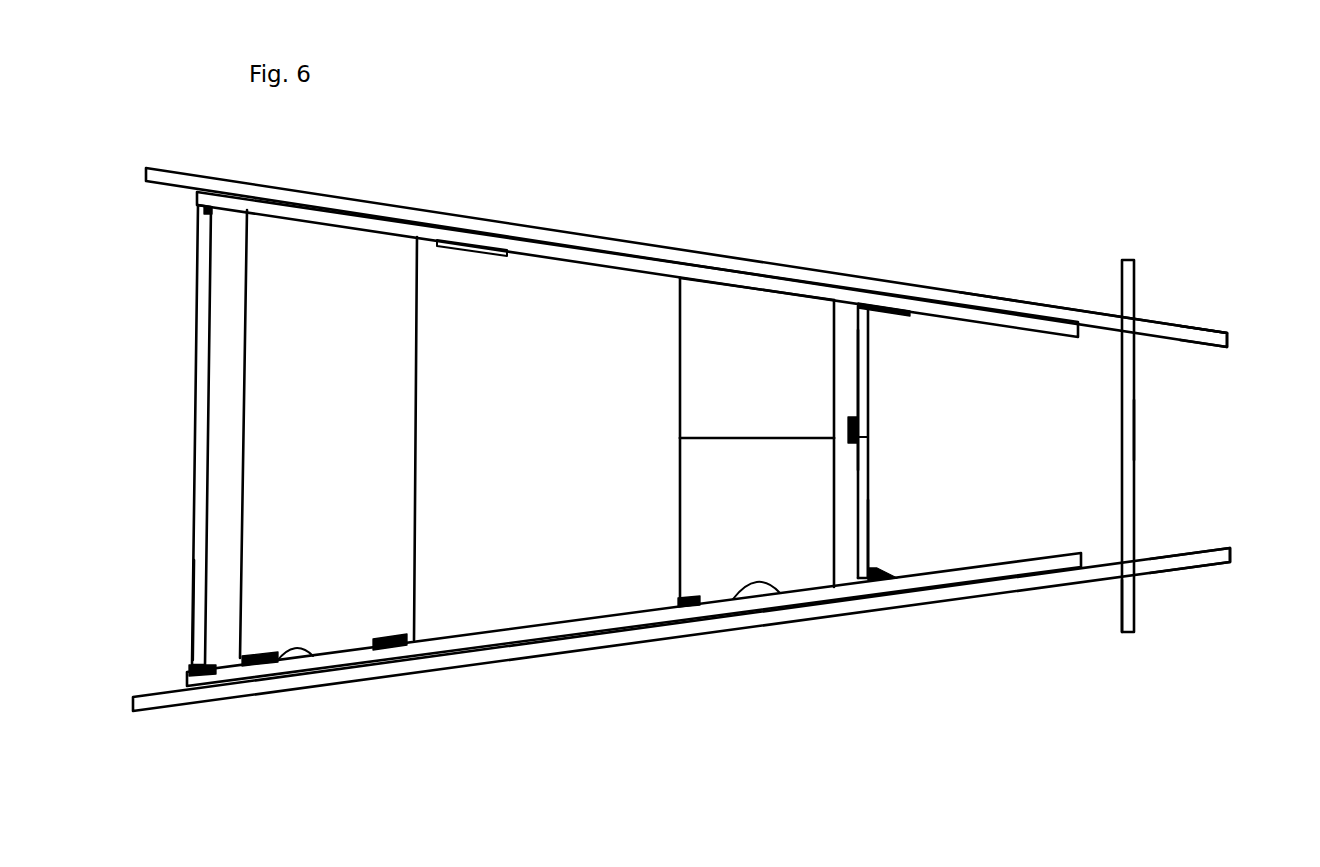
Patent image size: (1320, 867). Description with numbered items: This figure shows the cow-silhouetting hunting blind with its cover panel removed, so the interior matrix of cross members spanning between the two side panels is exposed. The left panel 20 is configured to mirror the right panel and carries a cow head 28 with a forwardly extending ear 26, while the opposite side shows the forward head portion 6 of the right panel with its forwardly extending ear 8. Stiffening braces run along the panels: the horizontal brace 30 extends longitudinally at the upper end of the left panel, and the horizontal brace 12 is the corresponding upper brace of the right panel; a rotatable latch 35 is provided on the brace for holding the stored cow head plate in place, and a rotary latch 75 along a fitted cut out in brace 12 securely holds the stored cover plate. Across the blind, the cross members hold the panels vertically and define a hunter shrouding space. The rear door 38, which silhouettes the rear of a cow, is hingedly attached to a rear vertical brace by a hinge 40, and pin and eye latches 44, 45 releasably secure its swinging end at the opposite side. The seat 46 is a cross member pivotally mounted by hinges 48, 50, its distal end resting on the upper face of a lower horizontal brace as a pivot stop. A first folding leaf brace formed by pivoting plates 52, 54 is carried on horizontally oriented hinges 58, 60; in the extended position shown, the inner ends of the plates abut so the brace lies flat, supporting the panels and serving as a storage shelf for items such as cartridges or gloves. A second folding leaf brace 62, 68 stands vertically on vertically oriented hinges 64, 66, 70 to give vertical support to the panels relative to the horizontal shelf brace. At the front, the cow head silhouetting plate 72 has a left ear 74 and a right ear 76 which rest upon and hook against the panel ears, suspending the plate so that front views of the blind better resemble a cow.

The forward head portion 6 is at (1035, 588).
The ear 8 is at (1187, 567).
The brace 12 is at (520, 636).
The left panel 20 is at (648, 243).
The ear 26 is at (1182, 343).
The cow head 28 is at (1037, 303).
The brace 30 is at (580, 252).
The rotatable latch 35 is at (490, 256).
The rear door 38 is at (202, 295).
The hinge 40 is at (215, 212).
The pin and eye latch 44 is at (192, 668).
The pin and eye latch 45 is at (208, 665).
The seat 46 is at (320, 272).
The hinge 48 is at (313, 657).
The hinge 50 is at (393, 634).
The pivoting plate 52 is at (717, 393).
The pivoting plate 54 is at (735, 537).
The hinge 58 is at (710, 285).
The hinge 60 is at (690, 596).
The folding leaf brace 62 is at (863, 393).
The hinge 64 is at (852, 446).
The hinge 66 is at (867, 312).
The folding leaf brace 68 is at (866, 517).
The hinge 70 is at (877, 568).
The cow head silhouetting plate 72 is at (1134, 430).
The left ear 74 is at (1122, 603).
The rotary latch 75 is at (733, 582).
The right ear 76 is at (1134, 280).